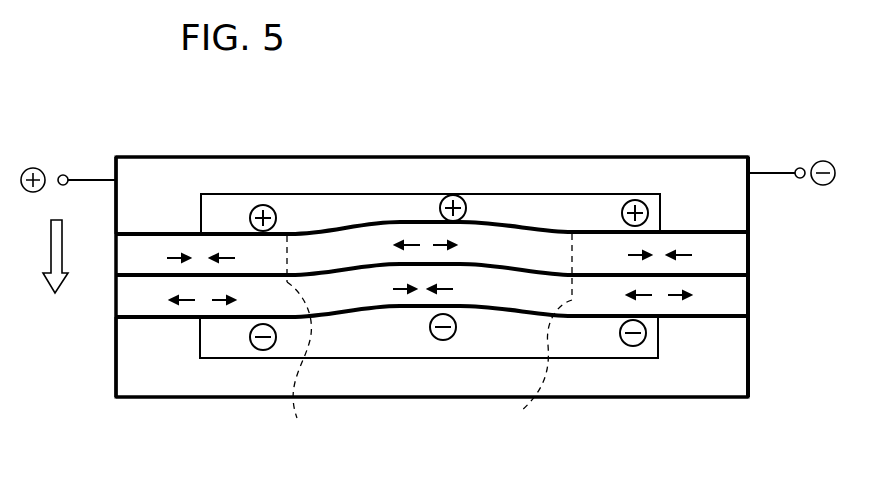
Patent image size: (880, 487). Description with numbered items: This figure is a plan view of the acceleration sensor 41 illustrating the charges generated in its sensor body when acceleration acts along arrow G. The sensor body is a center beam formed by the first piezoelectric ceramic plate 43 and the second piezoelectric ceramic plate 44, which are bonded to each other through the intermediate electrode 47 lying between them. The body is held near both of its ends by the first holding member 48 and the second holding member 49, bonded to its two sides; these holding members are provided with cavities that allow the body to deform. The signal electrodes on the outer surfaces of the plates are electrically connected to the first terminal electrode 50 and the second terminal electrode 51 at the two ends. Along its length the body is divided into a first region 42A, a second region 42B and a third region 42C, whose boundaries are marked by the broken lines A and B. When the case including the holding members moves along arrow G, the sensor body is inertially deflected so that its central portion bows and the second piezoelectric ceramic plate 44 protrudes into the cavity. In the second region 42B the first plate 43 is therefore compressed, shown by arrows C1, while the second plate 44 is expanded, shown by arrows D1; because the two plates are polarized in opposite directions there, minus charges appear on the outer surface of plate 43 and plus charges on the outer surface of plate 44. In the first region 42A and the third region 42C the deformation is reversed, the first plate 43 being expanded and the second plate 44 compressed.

The acceleration sensor 41 is at (318, 150).
The first region 42A is at (245, 292).
The second region 42B is at (503, 293).
The third region 42C is at (603, 248).
The first piezoelectric ceramic plate 43 is at (358, 295).
The second piezoelectric ceramic plate 44 is at (368, 240).
The intermediate electrode 47 is at (320, 273).
The first holding member 48 is at (455, 398).
The second holding member 49 is at (195, 157).
The first terminal electrode 50 is at (748, 293).
The second terminal electrode 51 is at (116, 343).
The arrow D1 is at (435, 243).
The arrow C1 is at (408, 290).
The broken line A is at (300, 367).
The broken line B is at (540, 378).
The arrow G is at (44, 256).